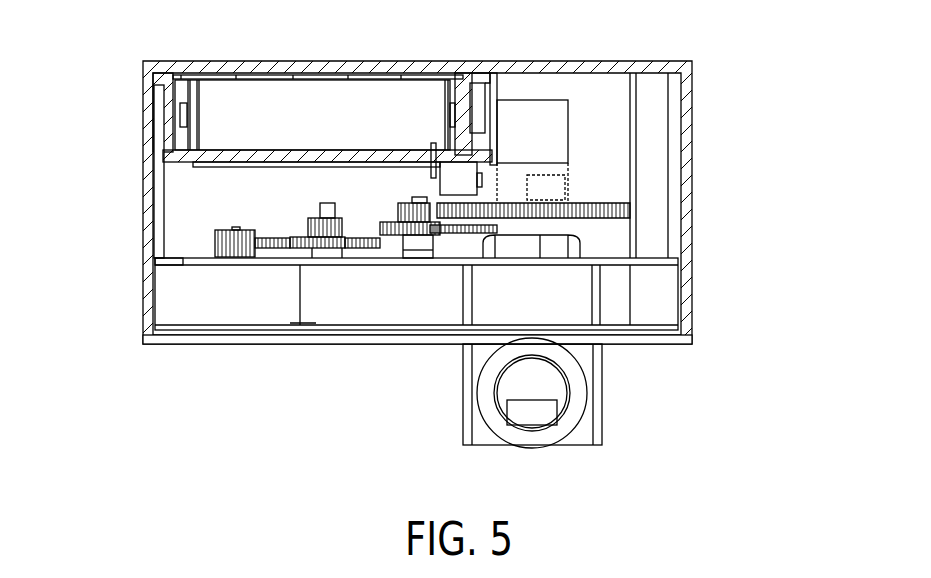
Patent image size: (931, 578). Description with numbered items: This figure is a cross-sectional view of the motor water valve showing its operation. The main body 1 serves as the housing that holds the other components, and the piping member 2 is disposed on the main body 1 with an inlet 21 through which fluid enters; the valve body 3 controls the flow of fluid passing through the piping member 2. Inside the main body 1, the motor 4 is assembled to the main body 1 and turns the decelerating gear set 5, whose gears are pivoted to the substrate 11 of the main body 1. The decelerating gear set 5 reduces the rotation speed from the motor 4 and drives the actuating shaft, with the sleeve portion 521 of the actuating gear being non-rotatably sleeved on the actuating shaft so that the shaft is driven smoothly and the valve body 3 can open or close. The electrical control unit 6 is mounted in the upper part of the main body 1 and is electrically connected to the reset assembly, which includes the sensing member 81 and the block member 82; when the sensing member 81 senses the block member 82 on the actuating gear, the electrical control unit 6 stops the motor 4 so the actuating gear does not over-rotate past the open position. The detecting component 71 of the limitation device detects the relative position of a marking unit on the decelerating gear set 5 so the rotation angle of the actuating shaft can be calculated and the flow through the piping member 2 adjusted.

The main body 1 is at (558, 67).
The substrate 11 is at (195, 258).
The piping member 2 is at (612, 378).
The inlet 21 is at (560, 397).
The valve body 3 is at (530, 160).
The motor 4 is at (238, 300).
The decelerating gear set 5 is at (377, 252).
The sleeve portion 521 is at (555, 123).
The electrical control unit 6 is at (288, 160).
The detecting component 71 is at (453, 177).
The sensing member 81 is at (495, 172).
The block member 82 is at (552, 187).